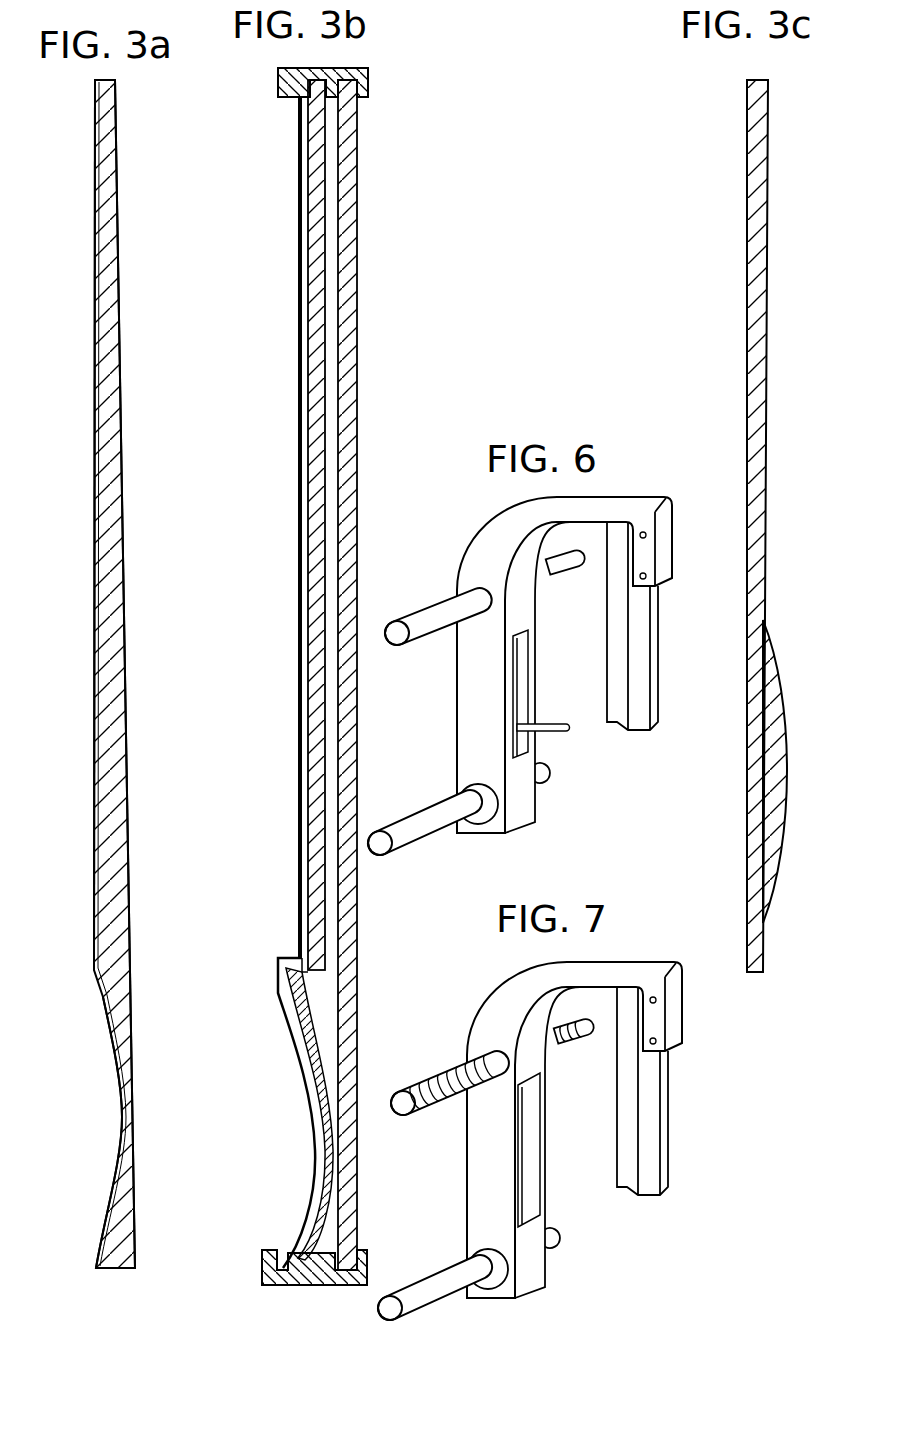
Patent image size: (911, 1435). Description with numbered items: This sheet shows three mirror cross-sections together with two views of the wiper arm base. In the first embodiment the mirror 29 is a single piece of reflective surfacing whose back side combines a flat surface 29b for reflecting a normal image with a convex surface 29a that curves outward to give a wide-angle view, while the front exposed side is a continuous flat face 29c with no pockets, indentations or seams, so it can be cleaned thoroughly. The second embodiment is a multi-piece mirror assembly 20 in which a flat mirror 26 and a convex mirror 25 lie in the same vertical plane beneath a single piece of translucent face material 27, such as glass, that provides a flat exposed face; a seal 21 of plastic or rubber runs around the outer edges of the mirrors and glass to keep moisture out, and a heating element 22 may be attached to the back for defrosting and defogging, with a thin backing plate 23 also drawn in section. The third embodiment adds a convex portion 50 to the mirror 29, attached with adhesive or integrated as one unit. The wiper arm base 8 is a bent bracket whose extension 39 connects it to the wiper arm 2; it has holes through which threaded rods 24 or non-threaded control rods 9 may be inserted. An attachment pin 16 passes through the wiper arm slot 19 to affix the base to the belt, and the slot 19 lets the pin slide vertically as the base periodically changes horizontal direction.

In FIG. 3A, the mirror 29 is at (118, 1272).
In FIG. 3A, the convex surface 29a is at (120, 1114).
In FIG. 3A, the flat surface 29b is at (96, 566).
In FIG. 3A, the continuous flat face 29c is at (124, 596).
In FIG. 3B, the seal 21 is at (360, 72).
In FIG. 3B, the flat mirror 26 is at (318, 312).
In FIG. 3B, the translucent face material 27 is at (360, 548).
In FIG. 3B, the plate 23 is at (300, 752).
In FIG. 3B, the heating element 22 is at (294, 945).
In FIG. 3B, the multi-piece mirror assembly 20 is at (330, 1003).
In FIG. 3B, the convex mirror 25 is at (322, 1150).
In FIG. 3C, the convex portion 50 is at (784, 706).
In FIG. 6, the wiper arm base 8 is at (470, 546).
In FIG. 7, the wiper arm base 8 is at (560, 1130).
In FIG. 6, the non-threaded control rod 9 is at (428, 616).
In FIG. 7, the non-threaded control rod 9 is at (467, 1276).
In FIG. 6, the extension 39 is at (672, 514).
In FIG. 7, the extension 39 is at (689, 1004).
In FIG. 6, the wiper arm 2 is at (662, 652).
In FIG. 7, the wiper arm 2 is at (666, 1091).
In FIG. 6, the attachment pin 16 is at (542, 722).
In FIG. 7, the threaded rod 24 is at (491, 1068).
In FIG. 7, the wiper arm slot 19 is at (555, 1150).